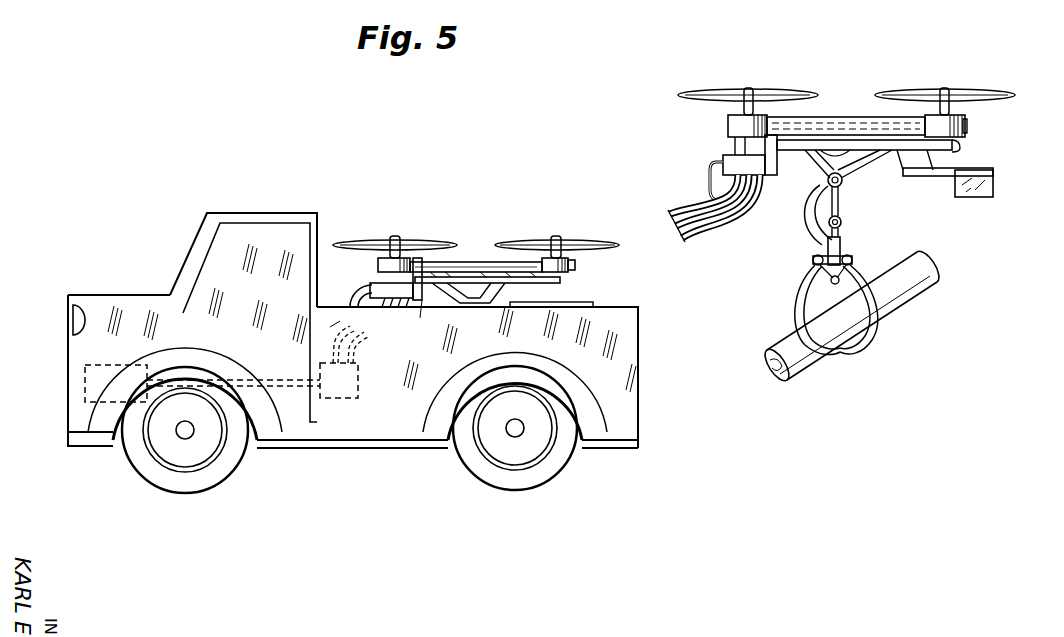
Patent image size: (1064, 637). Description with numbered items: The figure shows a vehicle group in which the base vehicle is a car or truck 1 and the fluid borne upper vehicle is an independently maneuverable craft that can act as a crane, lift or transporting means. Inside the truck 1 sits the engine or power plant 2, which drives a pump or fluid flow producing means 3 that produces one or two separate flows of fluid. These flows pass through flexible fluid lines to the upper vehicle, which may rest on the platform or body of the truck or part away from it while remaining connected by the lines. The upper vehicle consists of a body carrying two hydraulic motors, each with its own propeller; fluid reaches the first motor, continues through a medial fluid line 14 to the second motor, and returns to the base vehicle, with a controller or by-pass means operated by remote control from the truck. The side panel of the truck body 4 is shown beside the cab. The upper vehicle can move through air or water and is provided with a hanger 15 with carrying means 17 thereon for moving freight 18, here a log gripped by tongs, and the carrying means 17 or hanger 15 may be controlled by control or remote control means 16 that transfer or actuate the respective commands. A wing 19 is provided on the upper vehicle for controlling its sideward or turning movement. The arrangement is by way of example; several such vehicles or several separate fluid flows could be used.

The truck 1 is at (240, 230).
The engine 2 is at (107, 393).
The pump 3 is at (335, 398).
The truck body 4 is at (398, 410).
The medial fluid line 14 is at (870, 118).
The hanger 15 is at (843, 203).
The control means 16 is at (812, 233).
The carrying means 17 is at (798, 317).
The freight 18 is at (896, 277).
The wing 19 is at (993, 183).